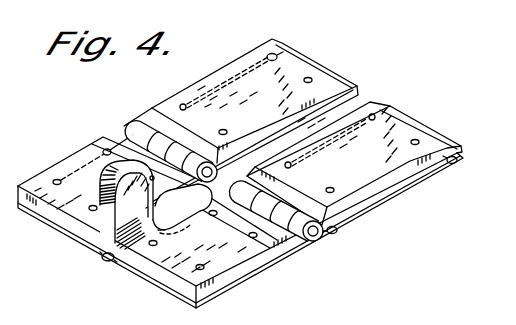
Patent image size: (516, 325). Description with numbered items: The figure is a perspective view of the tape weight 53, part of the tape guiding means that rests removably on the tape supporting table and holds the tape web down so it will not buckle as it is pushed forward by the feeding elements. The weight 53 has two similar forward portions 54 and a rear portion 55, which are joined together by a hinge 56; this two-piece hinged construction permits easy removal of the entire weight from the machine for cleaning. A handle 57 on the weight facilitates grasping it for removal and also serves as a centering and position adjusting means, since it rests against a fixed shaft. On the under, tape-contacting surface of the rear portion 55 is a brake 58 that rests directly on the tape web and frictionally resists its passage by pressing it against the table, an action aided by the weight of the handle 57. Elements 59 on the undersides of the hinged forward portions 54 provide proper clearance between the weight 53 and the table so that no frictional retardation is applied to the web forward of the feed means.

The tape weight 53 is at (64, 158).
The forward portions 54 is at (206, 77).
The rear portion 55 is at (264, 262).
The hinge 56 is at (133, 121).
The handle 57 is at (127, 193).
The brake 58 is at (107, 262).
The clearance elements 59 is at (292, 52).